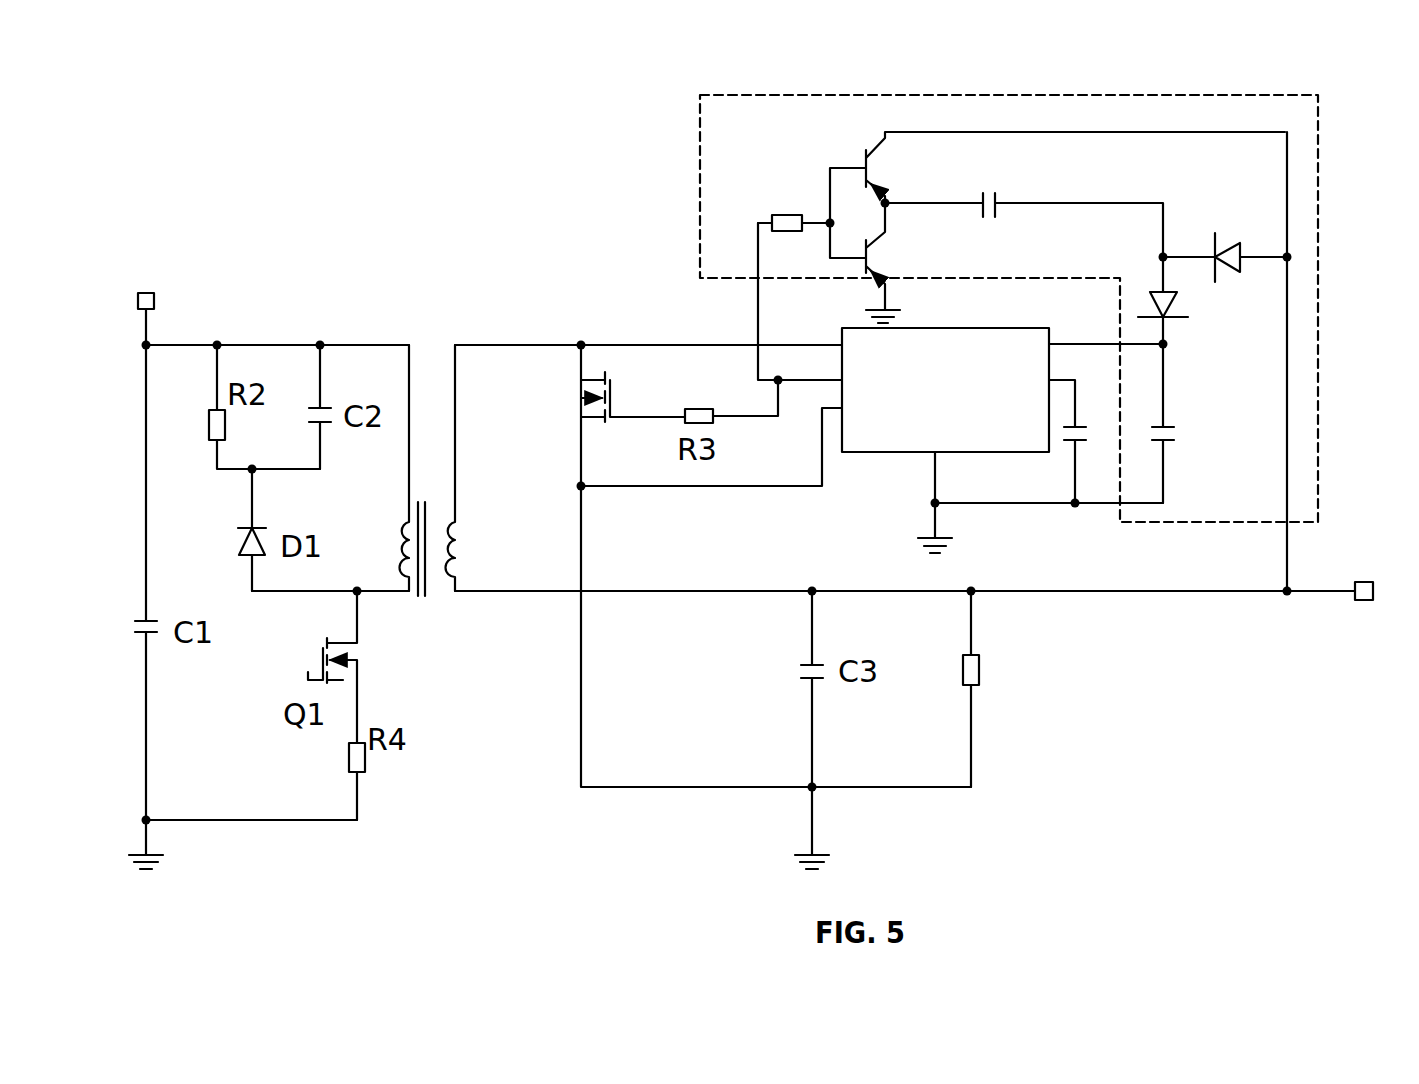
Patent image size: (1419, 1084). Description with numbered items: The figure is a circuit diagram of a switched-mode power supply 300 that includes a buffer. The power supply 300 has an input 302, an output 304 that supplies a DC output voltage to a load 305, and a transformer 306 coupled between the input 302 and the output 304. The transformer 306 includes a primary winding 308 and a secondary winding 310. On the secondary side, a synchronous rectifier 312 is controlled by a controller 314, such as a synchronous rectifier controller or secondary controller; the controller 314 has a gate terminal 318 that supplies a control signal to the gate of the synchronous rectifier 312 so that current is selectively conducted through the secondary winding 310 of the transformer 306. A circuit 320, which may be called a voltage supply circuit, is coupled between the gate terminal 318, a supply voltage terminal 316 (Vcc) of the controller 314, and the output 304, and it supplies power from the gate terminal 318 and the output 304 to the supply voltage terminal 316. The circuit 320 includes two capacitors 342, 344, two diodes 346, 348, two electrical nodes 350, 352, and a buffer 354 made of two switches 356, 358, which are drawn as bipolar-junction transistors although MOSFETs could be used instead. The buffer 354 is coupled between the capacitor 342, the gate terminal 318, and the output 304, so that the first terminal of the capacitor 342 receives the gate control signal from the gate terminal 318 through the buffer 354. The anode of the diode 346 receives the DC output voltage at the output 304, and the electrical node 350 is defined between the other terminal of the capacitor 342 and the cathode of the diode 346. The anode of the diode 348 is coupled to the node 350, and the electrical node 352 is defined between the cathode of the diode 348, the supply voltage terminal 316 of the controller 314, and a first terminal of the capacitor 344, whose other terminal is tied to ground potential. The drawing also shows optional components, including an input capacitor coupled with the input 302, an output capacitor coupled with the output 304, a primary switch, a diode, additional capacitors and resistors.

The switched-mode power supply 300 is at (430, 138).
The input 302 is at (156, 300).
The output 304 is at (1364, 582).
The load 305 is at (992, 680).
The transformer 306 is at (426, 603).
The primary winding 308 is at (384, 528).
The secondary winding 310 is at (464, 554).
The synchronous rectifier 312 is at (568, 404).
The controller 314 is at (1012, 325).
The supply voltage terminal 316 is at (1103, 334).
The gate terminal 318 is at (918, 391).
The circuit 320 is at (959, 92).
The capacitor 342 is at (1030, 181).
The capacitor 344 is at (1184, 433).
The diode 346 is at (1232, 241).
The diode 348 is at (1184, 303).
The electrical node 350 is at (1166, 251).
The electrical node 352 is at (1178, 345).
The buffer 354 is at (806, 187).
The switch 356 is at (936, 272).
The switch 358 is at (949, 185).